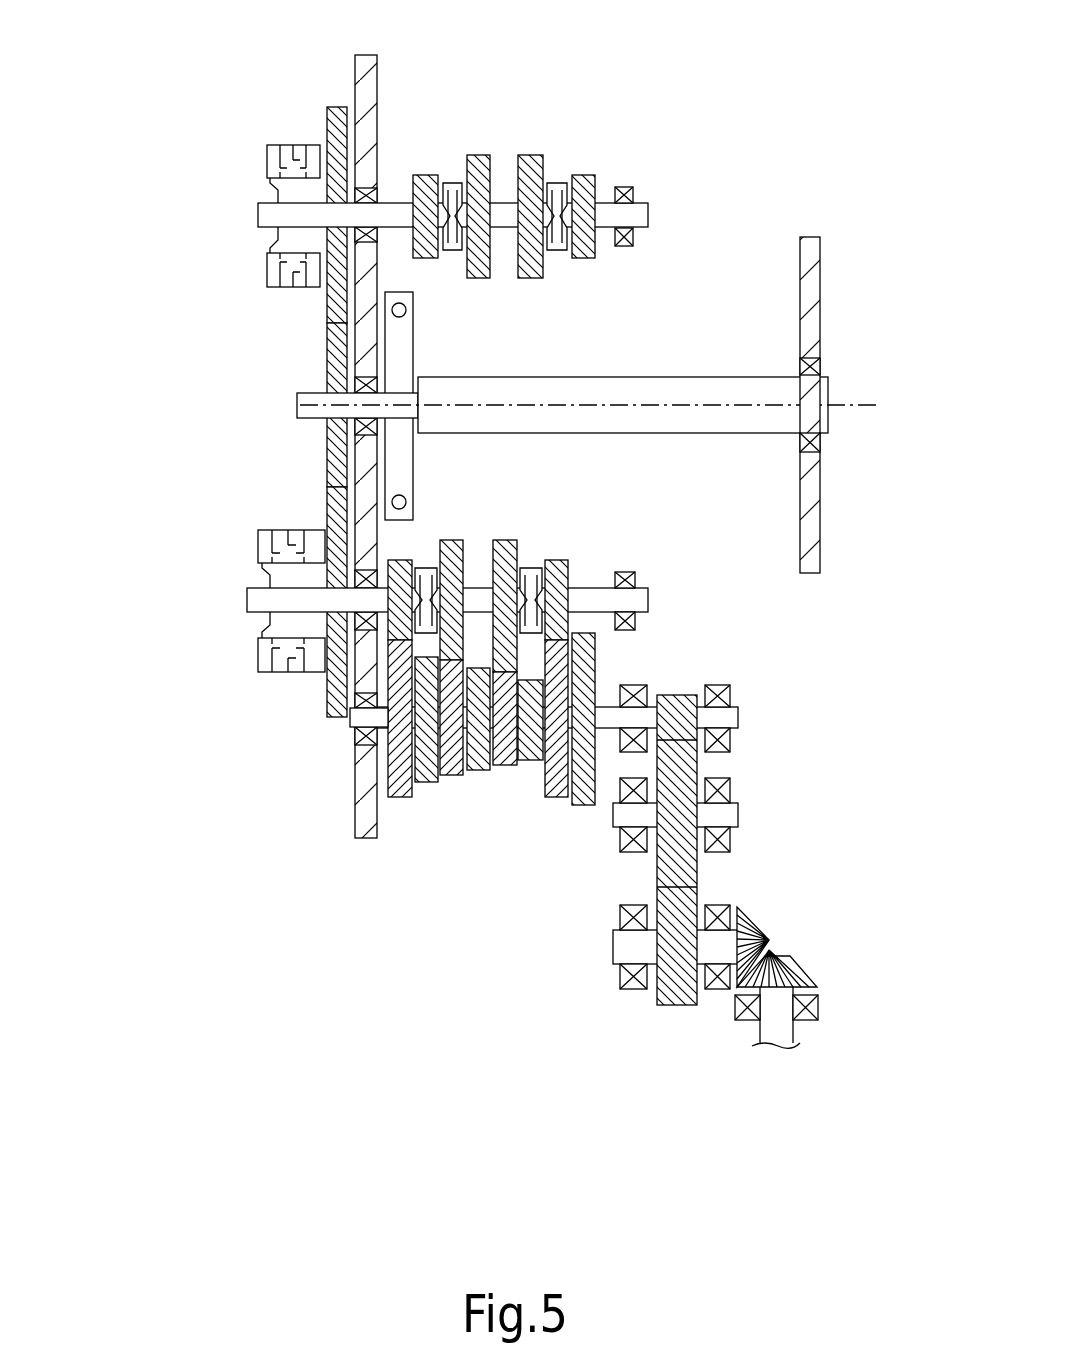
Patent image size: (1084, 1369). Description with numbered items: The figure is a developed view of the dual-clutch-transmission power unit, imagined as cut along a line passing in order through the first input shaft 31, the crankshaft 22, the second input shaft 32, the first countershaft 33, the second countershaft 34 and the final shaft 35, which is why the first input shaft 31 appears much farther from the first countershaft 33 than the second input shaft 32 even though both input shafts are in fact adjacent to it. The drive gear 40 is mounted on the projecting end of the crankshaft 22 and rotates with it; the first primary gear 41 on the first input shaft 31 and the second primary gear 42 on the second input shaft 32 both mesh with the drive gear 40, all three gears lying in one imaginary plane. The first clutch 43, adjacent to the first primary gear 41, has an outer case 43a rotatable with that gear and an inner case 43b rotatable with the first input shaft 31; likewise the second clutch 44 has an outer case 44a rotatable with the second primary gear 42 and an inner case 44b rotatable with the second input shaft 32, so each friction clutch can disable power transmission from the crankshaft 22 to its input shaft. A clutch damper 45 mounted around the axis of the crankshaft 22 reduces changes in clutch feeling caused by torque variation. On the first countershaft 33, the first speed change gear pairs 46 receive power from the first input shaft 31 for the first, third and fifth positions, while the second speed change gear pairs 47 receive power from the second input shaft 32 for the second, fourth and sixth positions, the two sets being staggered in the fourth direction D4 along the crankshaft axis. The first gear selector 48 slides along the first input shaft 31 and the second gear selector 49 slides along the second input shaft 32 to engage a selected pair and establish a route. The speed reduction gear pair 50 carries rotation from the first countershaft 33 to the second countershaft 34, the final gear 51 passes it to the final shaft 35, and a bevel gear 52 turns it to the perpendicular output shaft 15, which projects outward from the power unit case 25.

The output shaft 15 is at (790, 1028).
The crankshaft 22 is at (295, 405).
The power unit case 25 is at (355, 805).
The first input shaft 31 is at (257, 217).
The second input shaft 32 is at (245, 600).
The first countershaft 33 is at (345, 727).
The second countershaft 34 is at (738, 813).
The final shaft 35 is at (613, 948).
The drive gear 40 is at (326, 460).
The first primary gear 41 is at (326, 116).
The second primary gear 42 is at (322, 695).
The first clutch 43 is at (199, 169).
The outer case 43a is at (278, 143).
The inner case 43b is at (231, 225).
The second clutch 44 is at (201, 647).
The outer case 44a is at (265, 673).
The inner case 44b is at (262, 628).
The clutch damper 45 is at (396, 352).
The first speed change gear pairs 46 is at (583, 175).
The second speed change gear pairs 47 is at (558, 797).
The first gear selector 48 is at (530, 278).
The second gear selector 49 is at (532, 568).
The speed reduction gear pair 50 is at (675, 695).
The final gear 51 is at (677, 1005).
The bevel gear 52 is at (798, 963).
The fourth direction D4 is at (860, 402).